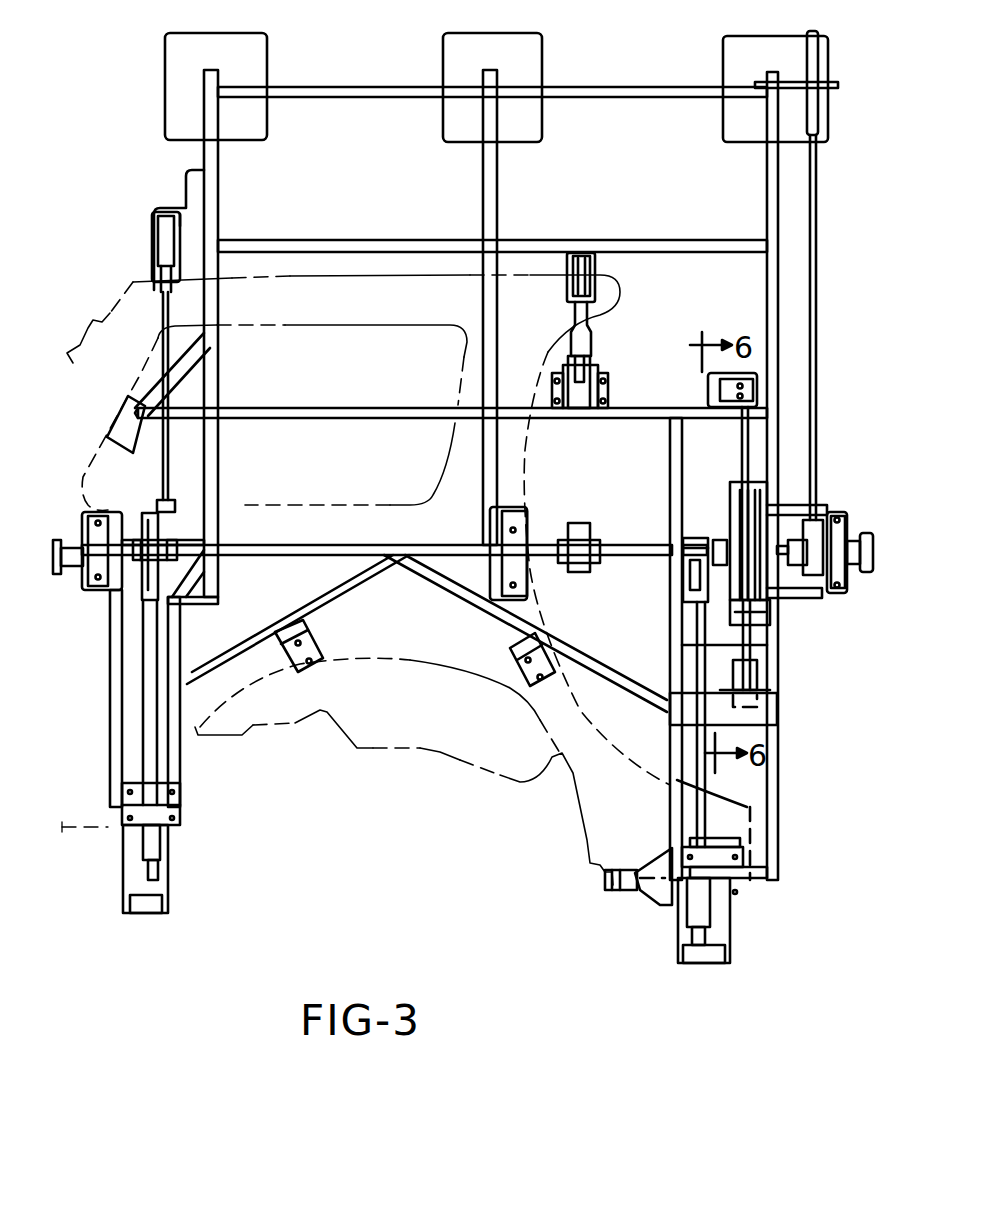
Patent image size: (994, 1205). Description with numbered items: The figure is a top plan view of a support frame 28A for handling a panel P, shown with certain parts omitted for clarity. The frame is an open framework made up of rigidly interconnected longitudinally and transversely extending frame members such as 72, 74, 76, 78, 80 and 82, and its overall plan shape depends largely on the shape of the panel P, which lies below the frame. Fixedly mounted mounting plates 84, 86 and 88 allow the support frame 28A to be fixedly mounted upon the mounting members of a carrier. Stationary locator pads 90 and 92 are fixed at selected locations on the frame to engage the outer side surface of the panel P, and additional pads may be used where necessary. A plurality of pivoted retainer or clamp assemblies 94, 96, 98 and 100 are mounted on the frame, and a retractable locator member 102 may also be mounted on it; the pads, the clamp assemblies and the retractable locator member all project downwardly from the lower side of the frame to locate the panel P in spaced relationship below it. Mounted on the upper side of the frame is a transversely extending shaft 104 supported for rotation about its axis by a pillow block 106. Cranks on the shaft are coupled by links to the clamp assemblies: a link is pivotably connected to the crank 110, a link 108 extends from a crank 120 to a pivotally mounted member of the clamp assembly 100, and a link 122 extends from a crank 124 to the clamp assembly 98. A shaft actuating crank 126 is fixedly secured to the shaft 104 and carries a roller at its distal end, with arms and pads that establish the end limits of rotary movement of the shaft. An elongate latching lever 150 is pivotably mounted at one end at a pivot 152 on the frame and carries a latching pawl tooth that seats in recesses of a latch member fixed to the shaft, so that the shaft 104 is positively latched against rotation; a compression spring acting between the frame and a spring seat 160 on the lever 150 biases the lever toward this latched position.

The support frame 28A is at (200, 158).
The pivoted retainer or clamp assembly 94 is at (146, 228).
The mounting plate 84 is at (252, 128).
The frame member 74 is at (372, 97).
The mounting plate 86 is at (532, 58).
The mounting plate 88 is at (732, 50).
The frame member 82 is at (767, 288).
The pivoted retainer or clamp assembly 96 is at (604, 292).
The frame member 72 is at (218, 312).
The middle vertical post 78 is at (483, 298).
The panel P is at (288, 328).
The frame member 76 is at (422, 408).
The pivot 152 is at (708, 386).
The latching lever 150 is at (767, 446).
The shaft actuating crank 126 is at (730, 497).
The crank 120 is at (690, 545).
The pillow block 106 is at (100, 512).
The shaft 104 is at (340, 545).
The crank 110 is at (180, 548).
The crank 124 is at (164, 490).
The link 108 is at (690, 608).
The locator pad 90 is at (310, 640).
The locator pad 92 is at (522, 665).
The spring seat 160 is at (760, 685).
The link 122 is at (182, 797).
The pivoted retainer or clamp assembly 98 is at (172, 858).
The frame member 80 is at (670, 808).
The pivoted retainer or clamp assembly 100 is at (672, 912).
The retractable locator member 102 is at (722, 918).